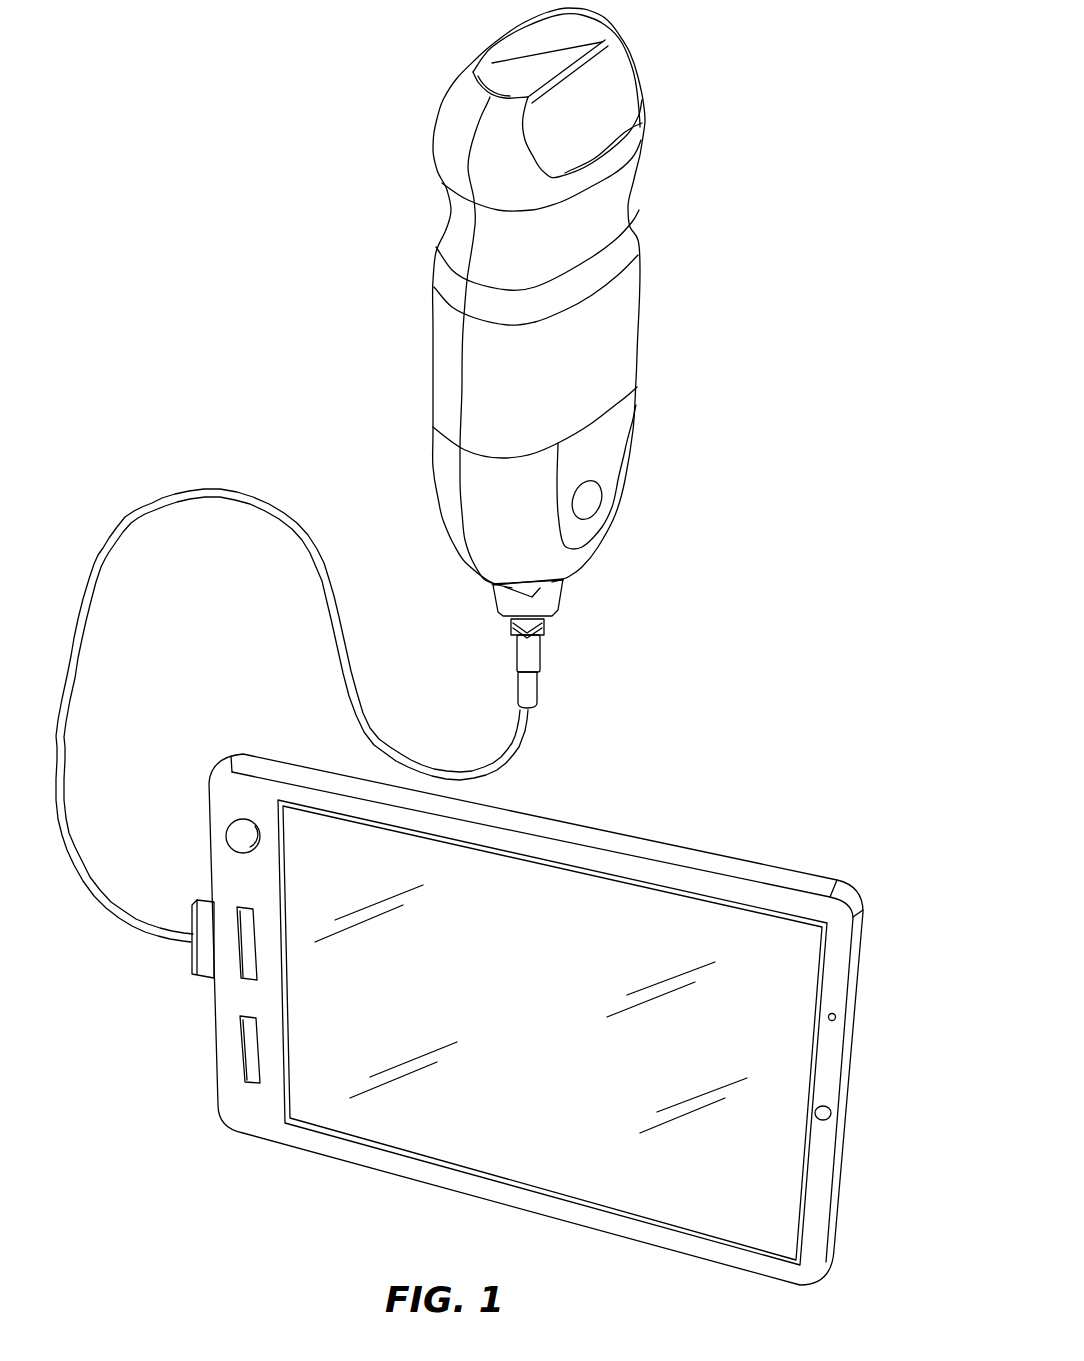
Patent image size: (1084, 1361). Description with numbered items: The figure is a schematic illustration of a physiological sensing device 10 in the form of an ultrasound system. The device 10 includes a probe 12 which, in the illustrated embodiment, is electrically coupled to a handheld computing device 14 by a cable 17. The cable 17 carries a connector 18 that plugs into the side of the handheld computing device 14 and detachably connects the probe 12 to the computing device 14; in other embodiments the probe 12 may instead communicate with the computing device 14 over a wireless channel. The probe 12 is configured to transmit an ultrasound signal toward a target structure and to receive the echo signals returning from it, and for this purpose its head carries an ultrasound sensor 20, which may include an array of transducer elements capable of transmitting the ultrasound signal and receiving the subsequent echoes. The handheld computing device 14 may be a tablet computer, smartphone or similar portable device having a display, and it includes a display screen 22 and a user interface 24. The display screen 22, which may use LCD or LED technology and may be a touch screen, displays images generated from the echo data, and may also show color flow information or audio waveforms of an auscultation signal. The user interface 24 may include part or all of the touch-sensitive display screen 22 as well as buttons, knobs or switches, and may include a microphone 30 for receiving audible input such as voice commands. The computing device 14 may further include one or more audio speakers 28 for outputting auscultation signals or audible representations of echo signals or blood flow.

The physiological sensing device 10 is at (870, 297).
The probe 12 is at (615, 330).
The handheld computing device 14 is at (715, 860).
The cable 17 is at (247, 490).
The connector 18 is at (192, 953).
The ultrasound sensor 20 is at (563, 43).
The display screen 22 is at (545, 1036).
The user interface 24 is at (247, 1052).
The audio speaker 28 is at (837, 1122).
The microphone 30 is at (838, 1018).